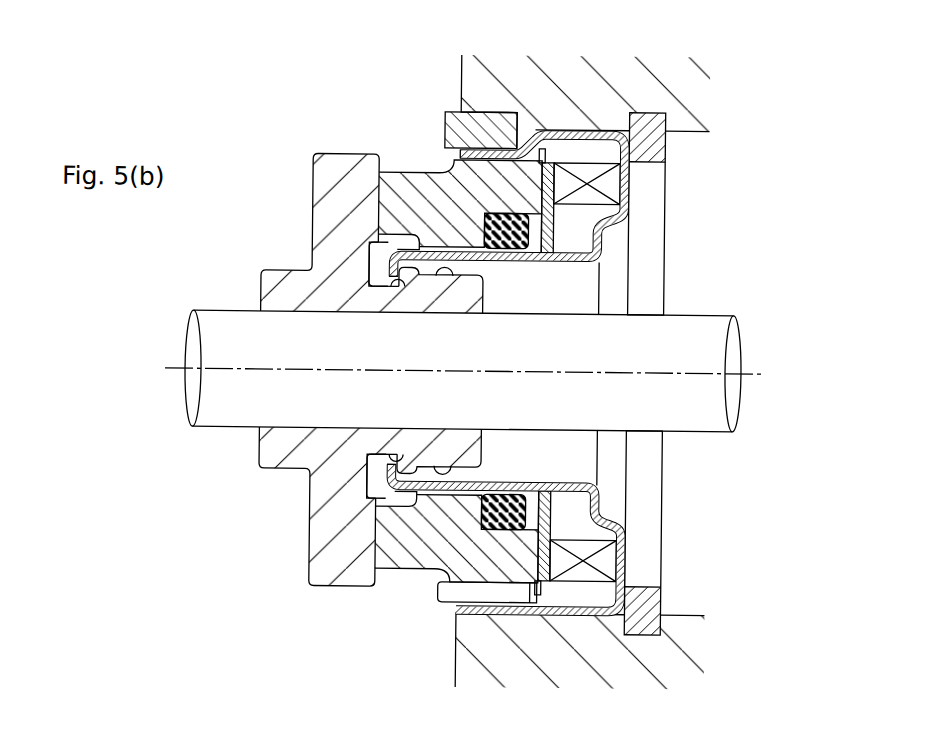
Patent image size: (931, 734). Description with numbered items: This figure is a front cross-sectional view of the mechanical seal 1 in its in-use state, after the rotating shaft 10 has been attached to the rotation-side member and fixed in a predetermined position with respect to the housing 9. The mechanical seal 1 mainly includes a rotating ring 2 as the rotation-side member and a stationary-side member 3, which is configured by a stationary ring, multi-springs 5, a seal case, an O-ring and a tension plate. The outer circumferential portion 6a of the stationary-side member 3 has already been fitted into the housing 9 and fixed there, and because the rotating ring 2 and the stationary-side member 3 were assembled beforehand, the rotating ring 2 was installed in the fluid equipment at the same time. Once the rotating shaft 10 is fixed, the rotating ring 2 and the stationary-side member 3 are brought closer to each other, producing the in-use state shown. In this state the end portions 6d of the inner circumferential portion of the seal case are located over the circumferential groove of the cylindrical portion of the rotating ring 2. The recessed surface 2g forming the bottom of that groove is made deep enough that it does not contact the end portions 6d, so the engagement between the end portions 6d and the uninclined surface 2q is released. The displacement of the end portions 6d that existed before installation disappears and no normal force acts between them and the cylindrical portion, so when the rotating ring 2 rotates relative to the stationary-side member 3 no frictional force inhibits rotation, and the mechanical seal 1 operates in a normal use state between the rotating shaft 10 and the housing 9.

The mechanical seal 1 is at (363, 80).
The rotating ring 2 is at (297, 188).
The recessed surface 2g is at (387, 288).
The uninclined surface 2q is at (447, 283).
The stationary-side member 3 is at (395, 152).
The multi-springs 5 is at (607, 186).
The outer circumferential portion 6a is at (578, 138).
The end portions 6d is at (393, 243).
The housing 9 is at (476, 87).
The rotating shaft 10 is at (682, 415).